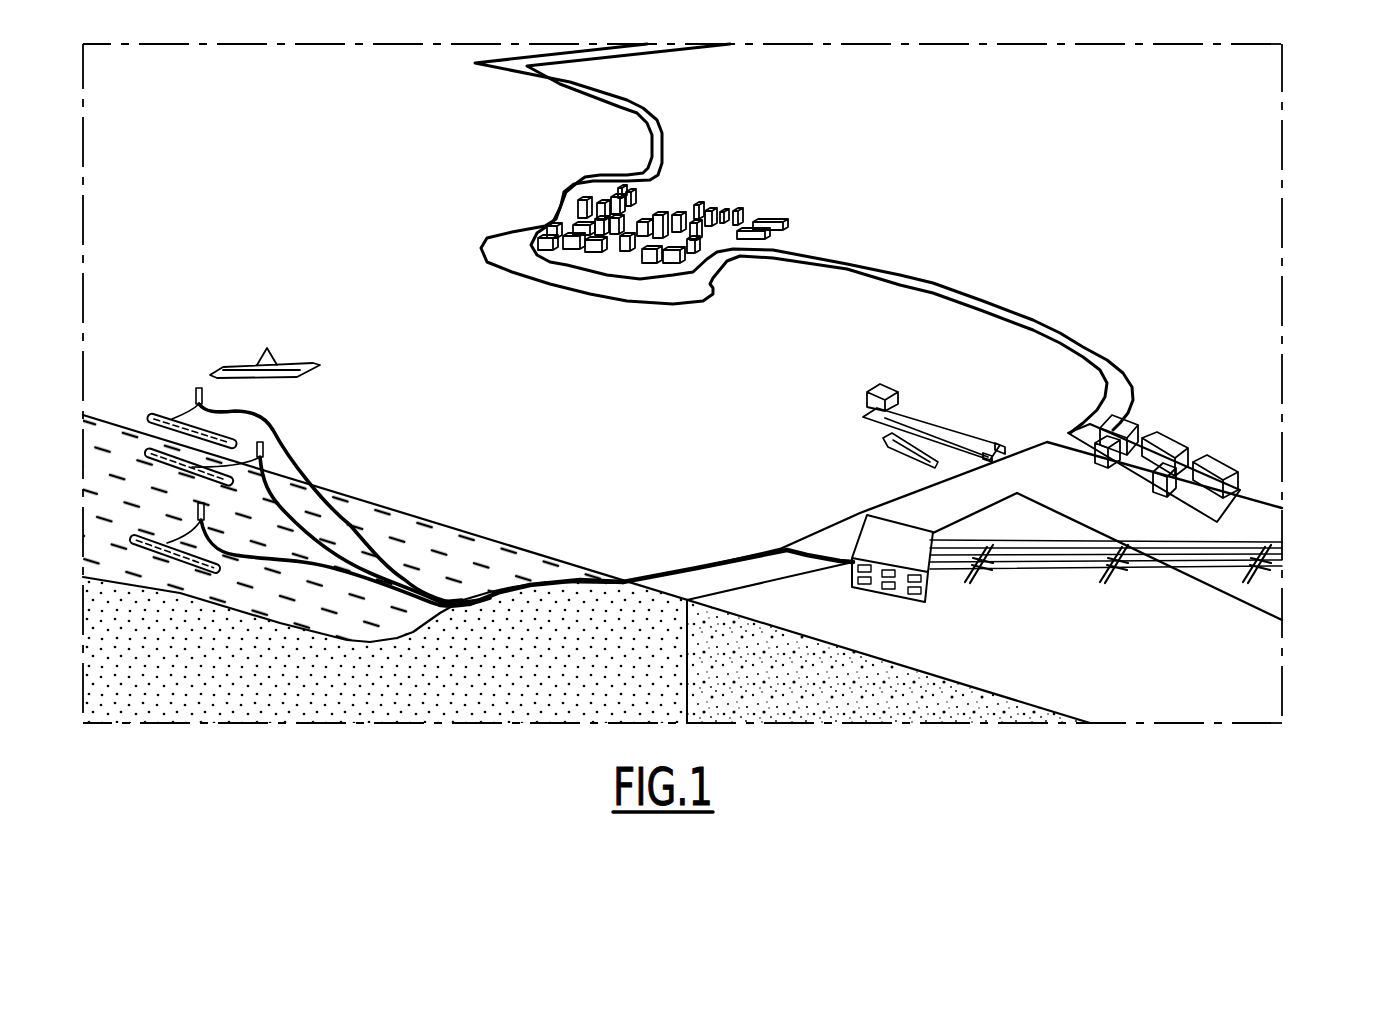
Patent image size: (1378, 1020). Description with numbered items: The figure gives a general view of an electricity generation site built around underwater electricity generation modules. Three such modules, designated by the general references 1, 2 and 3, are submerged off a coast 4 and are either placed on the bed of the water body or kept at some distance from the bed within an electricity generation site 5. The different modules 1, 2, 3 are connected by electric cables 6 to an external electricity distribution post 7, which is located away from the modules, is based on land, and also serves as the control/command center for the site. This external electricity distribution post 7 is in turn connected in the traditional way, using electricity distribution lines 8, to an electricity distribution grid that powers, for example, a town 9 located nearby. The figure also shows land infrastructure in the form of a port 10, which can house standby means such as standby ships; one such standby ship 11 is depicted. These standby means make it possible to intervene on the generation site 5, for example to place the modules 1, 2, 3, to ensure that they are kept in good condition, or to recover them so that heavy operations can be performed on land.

The underwater electricity generation module 1 is at (178, 565).
The underwater electricity generation module 2 is at (187, 477).
The underwater electricity generation module 3 is at (165, 402).
The coast 4 is at (697, 562).
The electricity generation site 5 is at (310, 422).
The electric cables 6 is at (382, 540).
The external electricity distribution post 7 is at (862, 500).
The electricity distribution lines 8 is at (1268, 582).
The town 9 is at (570, 167).
The port 10 is at (962, 413).
The standby ship 11 is at (870, 377).